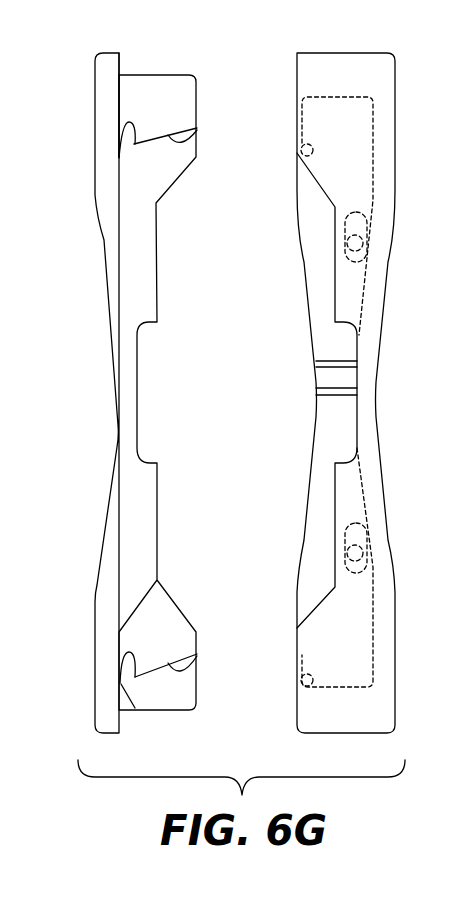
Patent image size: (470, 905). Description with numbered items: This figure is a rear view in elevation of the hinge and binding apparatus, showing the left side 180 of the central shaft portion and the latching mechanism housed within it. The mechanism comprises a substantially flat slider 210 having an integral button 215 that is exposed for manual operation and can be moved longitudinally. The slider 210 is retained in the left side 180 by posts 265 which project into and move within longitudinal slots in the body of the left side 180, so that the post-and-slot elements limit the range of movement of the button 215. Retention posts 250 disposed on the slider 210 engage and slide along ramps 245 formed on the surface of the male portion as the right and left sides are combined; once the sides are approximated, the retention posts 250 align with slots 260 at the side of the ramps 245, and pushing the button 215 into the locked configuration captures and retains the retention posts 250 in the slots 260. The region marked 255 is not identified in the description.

The left side 180 is at (117, 258).
The slider 210 is at (140, 527).
The button 215 is at (331, 347).
The ramps 245 is at (200, 131).
The retention posts 250 is at (120, 158).
The fastener region 255 is at (357, 213).
The slots 260 is at (300, 152).
The posts 265 is at (360, 242).